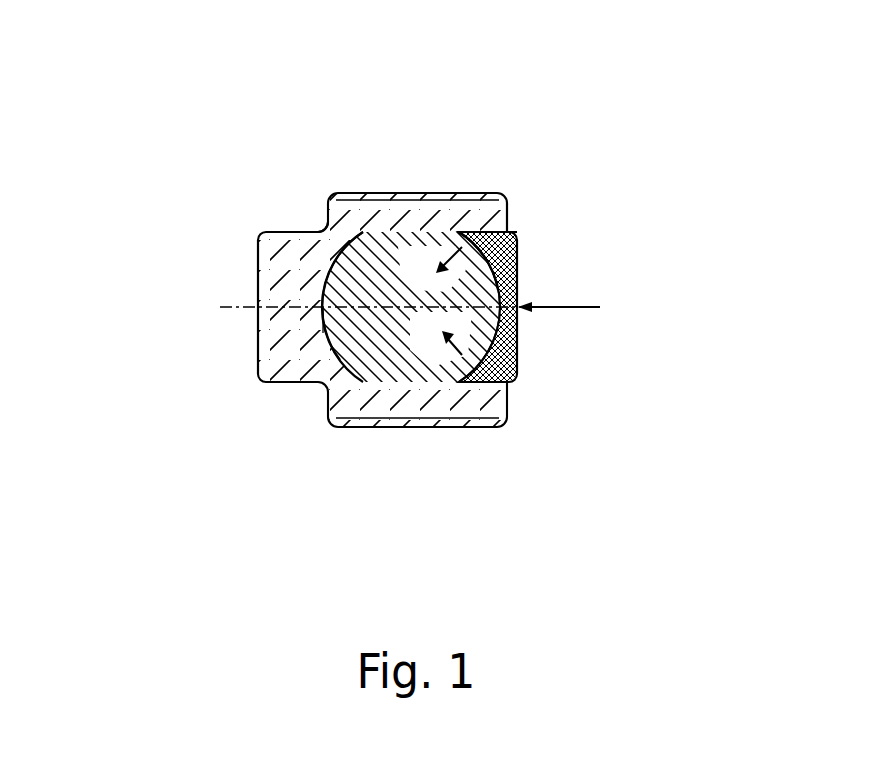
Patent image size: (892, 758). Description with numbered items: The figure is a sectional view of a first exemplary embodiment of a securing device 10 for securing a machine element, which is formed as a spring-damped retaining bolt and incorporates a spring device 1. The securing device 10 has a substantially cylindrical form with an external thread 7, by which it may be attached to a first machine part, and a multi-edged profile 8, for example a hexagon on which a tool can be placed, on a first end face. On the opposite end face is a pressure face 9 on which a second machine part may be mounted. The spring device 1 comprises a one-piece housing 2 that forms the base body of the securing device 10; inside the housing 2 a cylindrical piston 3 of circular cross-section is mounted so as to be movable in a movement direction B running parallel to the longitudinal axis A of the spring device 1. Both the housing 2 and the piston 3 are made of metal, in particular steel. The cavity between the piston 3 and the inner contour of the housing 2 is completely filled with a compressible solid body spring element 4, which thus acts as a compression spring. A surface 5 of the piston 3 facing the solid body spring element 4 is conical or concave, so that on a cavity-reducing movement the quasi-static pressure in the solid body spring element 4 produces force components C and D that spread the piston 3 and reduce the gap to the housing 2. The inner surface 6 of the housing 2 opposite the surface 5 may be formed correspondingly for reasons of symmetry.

The spring device 1 is at (525, 222).
The housing 2 is at (300, 382).
The piston 3 is at (515, 378).
The solid body spring element 4 is at (413, 338).
The surface 5 is at (471, 293).
The inner surface 6 is at (352, 339).
The external thread 7 is at (378, 192).
The multi-edged profile 8 is at (290, 229).
The pressure face 9 is at (530, 334).
The securing device 10 is at (600, 174).
The longitudinal axis A is at (248, 307).
The movement direction B is at (567, 307).
The force component C is at (437, 270).
The force component D is at (460, 355).